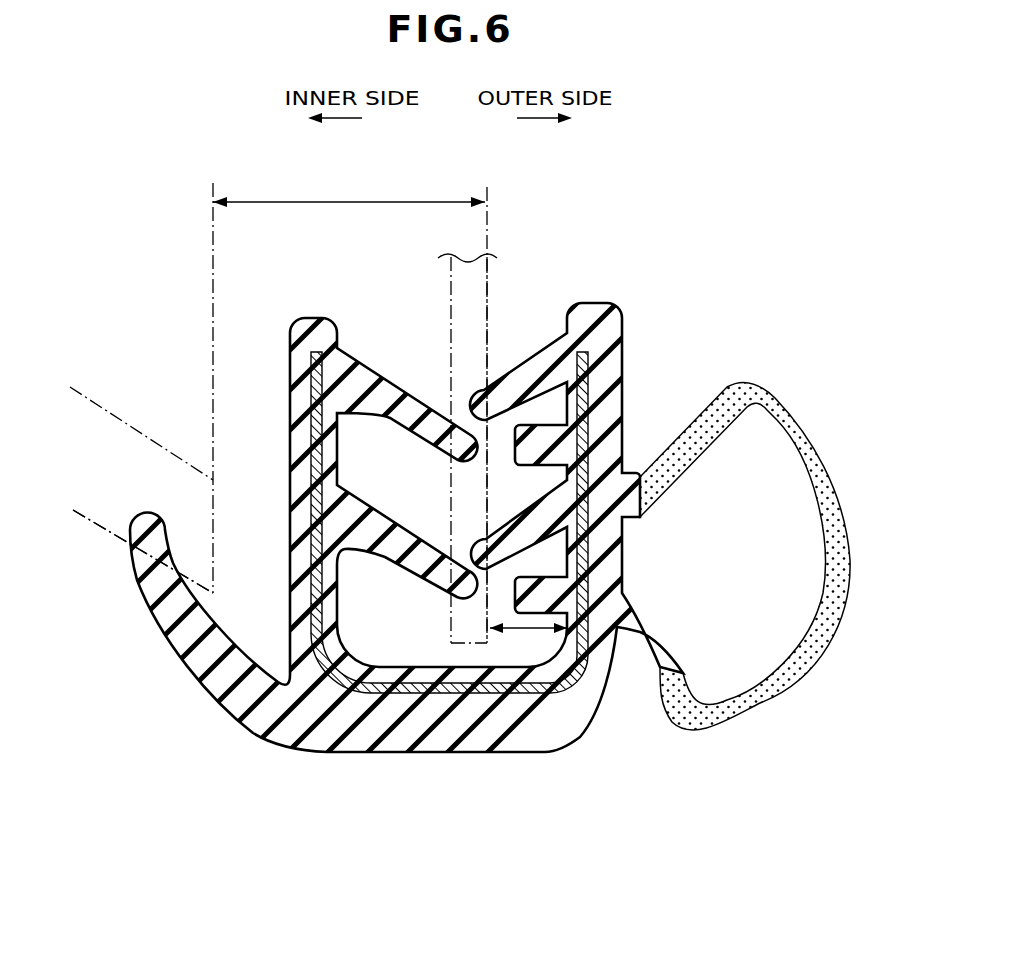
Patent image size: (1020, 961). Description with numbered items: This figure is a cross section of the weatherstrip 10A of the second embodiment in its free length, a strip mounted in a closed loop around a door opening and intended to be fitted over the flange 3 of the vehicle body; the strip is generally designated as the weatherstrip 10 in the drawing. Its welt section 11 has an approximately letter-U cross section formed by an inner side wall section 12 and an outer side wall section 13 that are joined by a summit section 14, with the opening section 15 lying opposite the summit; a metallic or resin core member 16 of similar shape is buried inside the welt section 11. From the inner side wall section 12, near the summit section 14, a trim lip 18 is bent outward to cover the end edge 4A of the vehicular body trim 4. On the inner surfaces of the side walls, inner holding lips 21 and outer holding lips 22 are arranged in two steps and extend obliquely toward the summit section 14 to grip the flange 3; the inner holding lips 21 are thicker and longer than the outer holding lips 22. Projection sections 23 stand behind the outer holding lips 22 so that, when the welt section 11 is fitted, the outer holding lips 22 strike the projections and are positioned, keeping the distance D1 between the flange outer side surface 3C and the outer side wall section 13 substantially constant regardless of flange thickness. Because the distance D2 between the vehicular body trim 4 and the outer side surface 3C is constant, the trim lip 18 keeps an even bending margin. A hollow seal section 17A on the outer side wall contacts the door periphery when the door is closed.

The weather strip 10 is at (233, 797).
The weatherstrip 10A is at (335, 766).
The welt section 11 is at (280, 580).
The inner side wall section 12 is at (297, 440).
The outer side wall section 13 is at (613, 400).
The summit section 14 is at (423, 746).
The opening section 15 is at (352, 318).
The core member 16 is at (483, 688).
The hollow seal section 17A is at (827, 482).
The trim lip 18 is at (173, 640).
The inner holding lip 21 is at (403, 533).
The outer holding lip 22 is at (507, 390).
The projection section 23 is at (553, 425).
The flange 3 is at (487, 276).
The outer side surface 3C is at (487, 322).
The vehicular body trim 4 is at (80, 470).
The end edge 4A is at (213, 592).
The distance D1 is at (530, 634).
The distance D2 is at (349, 192).